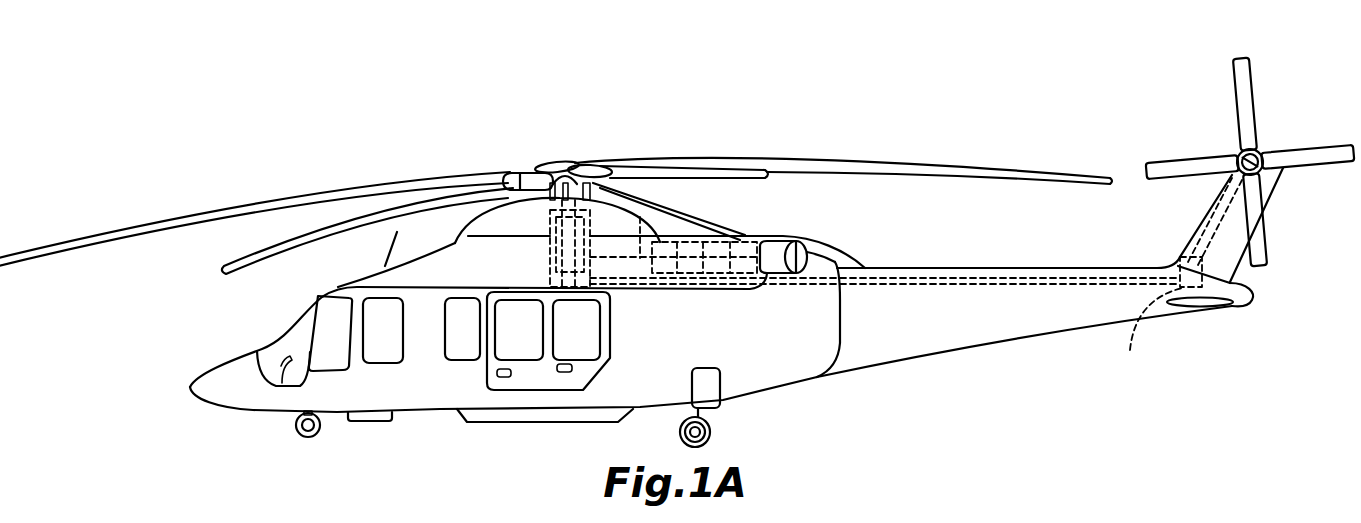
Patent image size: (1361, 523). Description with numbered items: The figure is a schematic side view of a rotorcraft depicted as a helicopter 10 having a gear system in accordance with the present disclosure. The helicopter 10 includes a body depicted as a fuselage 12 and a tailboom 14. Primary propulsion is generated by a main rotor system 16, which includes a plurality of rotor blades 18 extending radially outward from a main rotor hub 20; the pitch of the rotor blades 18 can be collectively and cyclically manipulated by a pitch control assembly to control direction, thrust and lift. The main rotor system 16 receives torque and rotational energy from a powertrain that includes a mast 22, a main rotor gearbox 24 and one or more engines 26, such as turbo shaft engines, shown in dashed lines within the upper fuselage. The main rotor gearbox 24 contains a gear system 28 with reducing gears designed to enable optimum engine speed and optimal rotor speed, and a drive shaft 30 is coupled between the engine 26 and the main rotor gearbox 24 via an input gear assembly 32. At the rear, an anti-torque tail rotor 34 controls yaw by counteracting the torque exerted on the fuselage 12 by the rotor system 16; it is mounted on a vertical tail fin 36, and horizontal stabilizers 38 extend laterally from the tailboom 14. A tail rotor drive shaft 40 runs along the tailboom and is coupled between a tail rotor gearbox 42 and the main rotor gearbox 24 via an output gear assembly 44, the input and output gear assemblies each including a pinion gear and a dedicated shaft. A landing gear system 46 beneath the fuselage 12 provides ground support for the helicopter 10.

The helicopter 10 is at (935, 118).
The fuselage 12 is at (797, 372).
The tailboom 14 is at (1003, 337).
The main rotor system 16 is at (806, 158).
The rotor blades 18 is at (312, 195).
The main rotor hub 20 is at (528, 173).
The mast 22 is at (595, 178).
The main rotor gearbox 24 is at (548, 267).
The engines 26 is at (722, 240).
The gear system 28 is at (553, 254).
The drive shaft 30 is at (656, 202).
The input gear assembly 32 is at (587, 227).
The tail rotor 34 is at (1250, 98).
The vertical tail fin 36 is at (1200, 227).
The horizontal stabilizers 38 is at (1189, 305).
The tail rotor drive shaft 40 is at (976, 276).
The tail rotor gearbox 42 is at (1149, 333).
The output gear assembly 44 is at (583, 288).
The landing gear system 46 is at (711, 437).